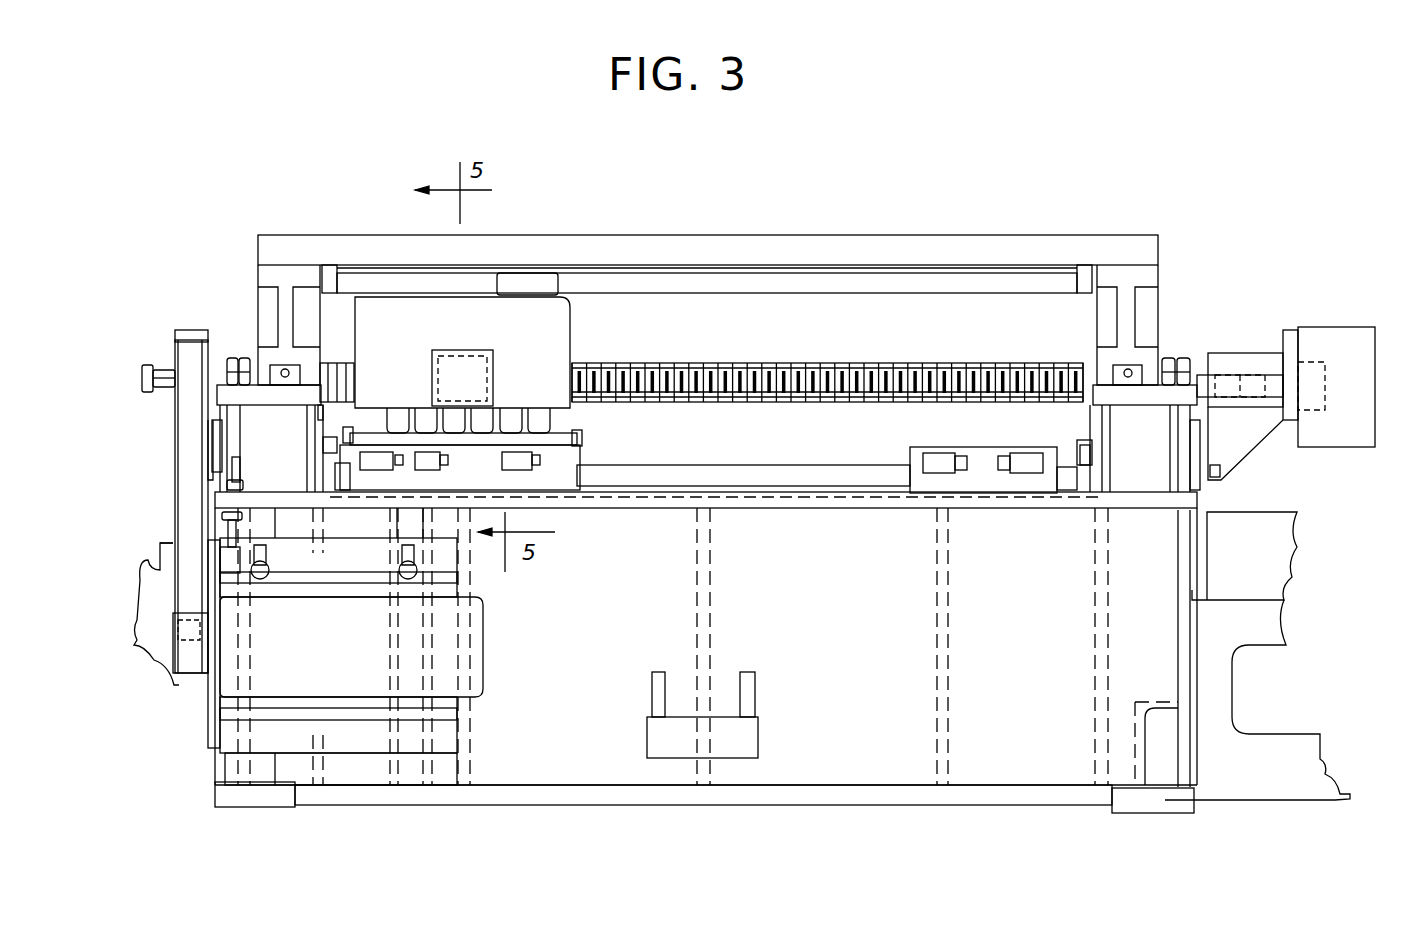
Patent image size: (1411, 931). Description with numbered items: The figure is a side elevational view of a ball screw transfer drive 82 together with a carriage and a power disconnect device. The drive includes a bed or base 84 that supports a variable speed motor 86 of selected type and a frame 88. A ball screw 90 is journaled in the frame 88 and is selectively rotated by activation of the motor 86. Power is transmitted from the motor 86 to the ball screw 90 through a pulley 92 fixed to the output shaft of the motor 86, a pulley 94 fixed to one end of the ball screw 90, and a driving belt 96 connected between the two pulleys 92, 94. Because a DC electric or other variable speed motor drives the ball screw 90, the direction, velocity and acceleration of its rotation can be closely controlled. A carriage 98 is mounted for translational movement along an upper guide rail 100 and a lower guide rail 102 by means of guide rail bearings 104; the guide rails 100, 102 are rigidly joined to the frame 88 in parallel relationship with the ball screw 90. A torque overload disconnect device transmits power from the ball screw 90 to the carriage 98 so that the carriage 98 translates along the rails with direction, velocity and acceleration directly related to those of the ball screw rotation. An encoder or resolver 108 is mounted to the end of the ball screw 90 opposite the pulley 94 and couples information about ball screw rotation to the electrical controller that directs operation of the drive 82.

The ball screw transfer drive 82 is at (701, 216).
The bed or base 84 is at (1185, 626).
The variable speed motor 86 is at (483, 645).
The frame 88 is at (272, 277).
The ball screw 90 is at (812, 338).
The pulley 92 is at (170, 632).
The pulley 94 is at (170, 340).
The driving belt 96 is at (188, 483).
The carriage 98 is at (545, 329).
The upper guide rail 100 is at (800, 288).
The lower guide rail 102 is at (753, 475).
The guide rail bearings 104 is at (527, 287).
The encoder or resolver 108 is at (1320, 340).